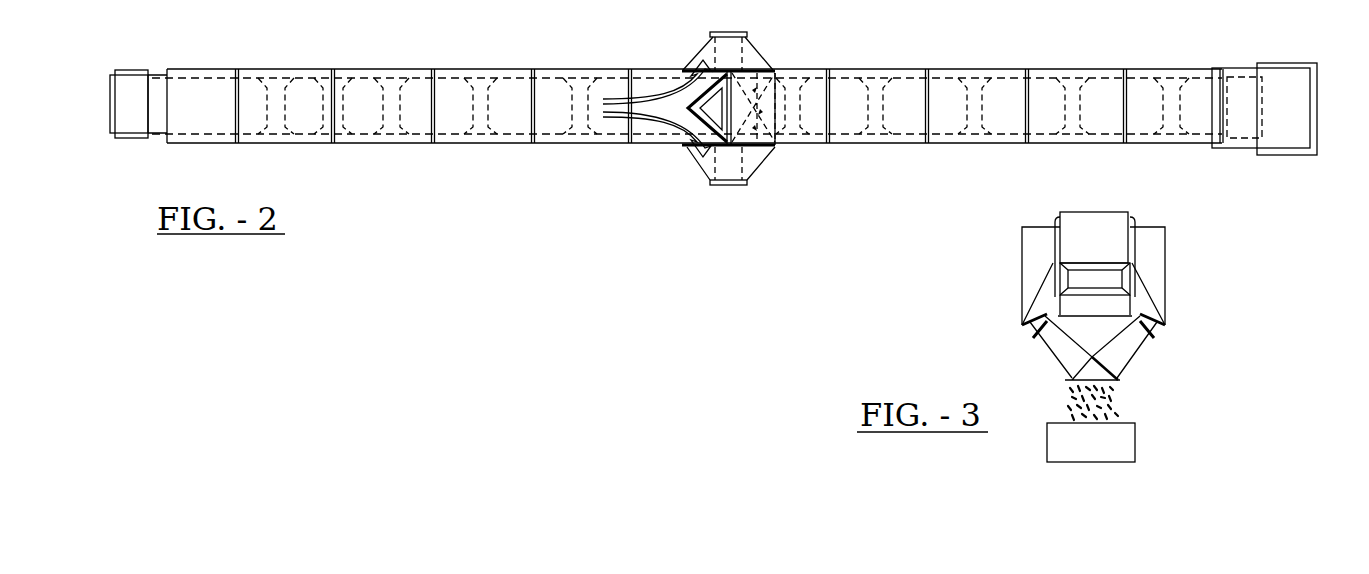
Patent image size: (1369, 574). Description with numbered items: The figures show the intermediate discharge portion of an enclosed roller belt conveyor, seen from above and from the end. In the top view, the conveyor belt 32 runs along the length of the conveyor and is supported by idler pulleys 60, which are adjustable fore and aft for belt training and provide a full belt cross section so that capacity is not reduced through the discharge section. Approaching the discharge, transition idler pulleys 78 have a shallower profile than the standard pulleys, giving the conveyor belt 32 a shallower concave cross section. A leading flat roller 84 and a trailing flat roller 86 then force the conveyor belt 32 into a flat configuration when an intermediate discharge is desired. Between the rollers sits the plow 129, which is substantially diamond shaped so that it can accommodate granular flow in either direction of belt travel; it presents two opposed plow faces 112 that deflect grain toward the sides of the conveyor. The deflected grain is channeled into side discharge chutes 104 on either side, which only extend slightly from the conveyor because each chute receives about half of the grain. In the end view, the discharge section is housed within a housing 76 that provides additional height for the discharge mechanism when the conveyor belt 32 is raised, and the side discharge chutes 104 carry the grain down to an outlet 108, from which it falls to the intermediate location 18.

In FIG. 2, the idler pulleys 60 is at (483, 147).
In FIG. 2, the conveyor belt 32 is at (933, 88).
In FIG. 2, the transition idler pulleys 78 is at (650, 70).
In FIG. 2, the leading flat roller 84 is at (672, 150).
In FIG. 2, the plow 129 is at (773, 70).
In FIG. 2, the trailing flat roller 86 is at (785, 152).
In FIG. 2, the plow face 112 is at (688, 148).
In FIG. 2, the side discharge chutes 104 is at (750, 177).
In FIG. 3, the side discharge chutes 104 is at (1152, 268).
In FIG. 3, the housing 76 is at (1097, 223).
In FIG. 3, the outlet 108 is at (1112, 390).
In FIG. 3, the intermediate location 18 is at (1120, 443).